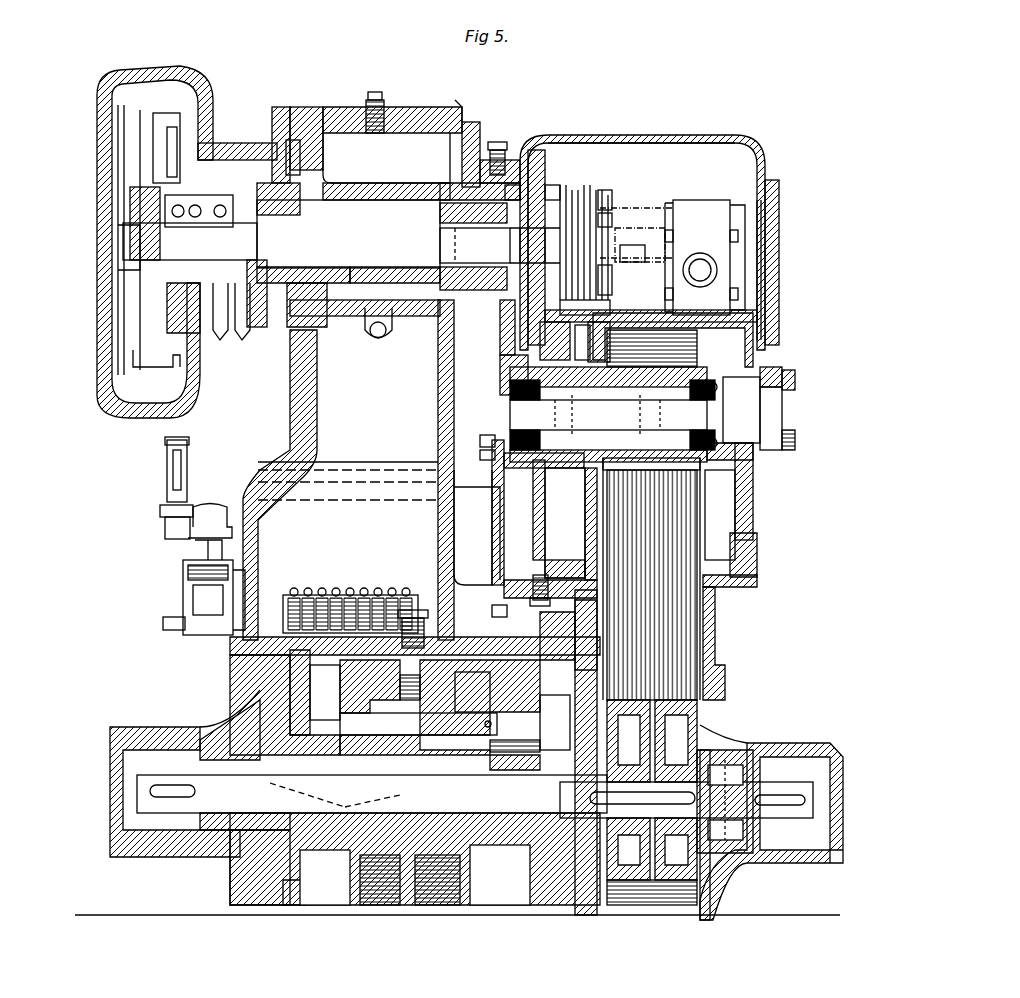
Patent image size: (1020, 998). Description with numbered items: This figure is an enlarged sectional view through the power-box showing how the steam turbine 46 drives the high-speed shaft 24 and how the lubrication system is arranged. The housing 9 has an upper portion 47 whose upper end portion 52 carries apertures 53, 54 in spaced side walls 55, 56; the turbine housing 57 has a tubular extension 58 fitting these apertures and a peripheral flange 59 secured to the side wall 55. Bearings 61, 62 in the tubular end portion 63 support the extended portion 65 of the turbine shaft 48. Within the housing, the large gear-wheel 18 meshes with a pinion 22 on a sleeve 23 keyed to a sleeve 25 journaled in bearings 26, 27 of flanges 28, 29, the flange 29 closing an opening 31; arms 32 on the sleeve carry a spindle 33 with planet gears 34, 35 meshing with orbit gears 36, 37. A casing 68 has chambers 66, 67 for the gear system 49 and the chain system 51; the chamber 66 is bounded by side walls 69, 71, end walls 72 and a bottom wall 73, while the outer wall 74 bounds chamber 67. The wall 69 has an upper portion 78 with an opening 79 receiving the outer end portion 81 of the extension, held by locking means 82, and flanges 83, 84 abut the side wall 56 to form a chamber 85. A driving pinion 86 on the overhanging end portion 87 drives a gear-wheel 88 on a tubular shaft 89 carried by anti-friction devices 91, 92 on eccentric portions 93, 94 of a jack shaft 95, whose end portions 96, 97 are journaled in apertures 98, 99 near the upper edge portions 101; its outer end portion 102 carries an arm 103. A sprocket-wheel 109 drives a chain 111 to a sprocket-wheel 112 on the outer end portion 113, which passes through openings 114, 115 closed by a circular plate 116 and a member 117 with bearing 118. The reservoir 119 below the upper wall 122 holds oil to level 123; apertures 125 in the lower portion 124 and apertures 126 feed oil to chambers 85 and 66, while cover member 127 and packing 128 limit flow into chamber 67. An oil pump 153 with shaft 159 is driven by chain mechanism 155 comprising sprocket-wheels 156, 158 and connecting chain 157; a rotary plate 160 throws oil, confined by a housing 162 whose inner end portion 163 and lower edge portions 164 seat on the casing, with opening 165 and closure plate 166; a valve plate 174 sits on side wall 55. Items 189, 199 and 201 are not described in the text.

The housing 9 is at (340, 636).
The gear-wheel 18 is at (240, 870).
The pinion 22 is at (215, 840).
The sleeve 23 is at (165, 805).
The high-speed shaft 24 is at (130, 848).
The sleeve 25 is at (290, 740).
The bearing 26 is at (292, 700).
The bearing 27 is at (530, 745).
The flange 28 is at (345, 700).
The flange 29 is at (540, 735).
The opening 31 is at (538, 630).
The arms 32 is at (500, 700).
The spindle 33 is at (440, 715).
The planet gear 34 is at (335, 793).
The planet gear 35 is at (355, 808).
The orbit gear 36 is at (390, 645).
The orbit gear 37 is at (456, 652).
The steam turbine 46 is at (125, 300).
The upper portion of the housing 47 is at (292, 430).
The turbine shaft 48 is at (500, 245).
The gear system 49 is at (592, 325).
The chain system 51 is at (700, 503).
The upper end portion 52 is at (330, 107).
The aperture 53 is at (305, 115).
The aperture 54 is at (460, 110).
The side wall 55 is at (293, 140).
The side wall 56 is at (470, 122).
The turbine housing 57 is at (205, 95).
The tubular extension 58 is at (383, 185).
The peripheral flange 59 is at (272, 135).
The bearing 61 is at (345, 210).
The bearing 62 is at (440, 210).
The tubular end portion 63 is at (268, 185).
The extended portion of the turbine shaft 65 is at (240, 270).
The chamber 66 is at (565, 523).
The chamber 67 is at (720, 515).
The casing 68 is at (757, 555).
The side wall 69 is at (495, 522).
The inner side wall 71 is at (588, 538).
The end walls 72 is at (536, 577).
The bottom wall 73 is at (528, 600).
The outer wall 74 is at (757, 582).
The upper portion 78 is at (510, 340).
The opening 79 is at (546, 170).
The outer end portion 81 is at (495, 142).
The locking means 82 is at (512, 185).
The flange 83 is at (485, 160).
The flange 84 is at (552, 195).
The chamber 85 is at (438, 458).
The driving pinion 86 is at (565, 200).
The overhanging end portion 87 is at (596, 195).
The gear-wheel 88 is at (515, 380).
The tubular shaft 89 is at (592, 352).
The anti-friction device 91 is at (540, 392).
The anti-friction device 92 is at (700, 395).
The eccentric portion 93 is at (548, 415).
The eccentric portion 94 is at (665, 408).
The jack shaft 95 is at (608, 415).
The end portion 96 is at (477, 434).
The end portion 97 is at (773, 420).
The aperture 98 is at (477, 450).
The aperture 99 is at (755, 458).
The horizontal upper edge portions 101 is at (755, 380).
The outer end portion 102 is at (795, 435).
The arm 103 is at (795, 396).
The sprocket-wheel 109 is at (690, 470).
The chain 111 is at (716, 618).
The sprocket-wheel 112 is at (655, 905).
The outer end portion 113 is at (686, 800).
The opening 114 is at (592, 735).
The opening 115 is at (705, 727).
The circular plate 116 is at (555, 660).
The member 117 is at (770, 745).
The bearing 118 is at (755, 775).
The chamber or reservoir 119 is at (348, 457).
The upper wall 122 is at (372, 133).
The oil level 123 is at (393, 460).
The lower portion of the side wall 124 is at (438, 498).
The apertures 125 is at (390, 482).
The apertures 126 is at (477, 528).
The cover member 127 is at (650, 300).
The packing 128 is at (547, 506).
The oil pump 153 is at (703, 200).
The chain mechanism 155 is at (600, 196).
The sprocket-wheel 156 is at (575, 339).
The connecting chain 157 is at (605, 295).
The sprocket-wheel 158 is at (600, 215).
The shaft 159 is at (640, 228).
The rotary plate 160 is at (640, 242).
The cover member or housing 162 is at (622, 136).
The inner end portion 163 is at (545, 137).
The lower edge portions 164 is at (772, 375).
The opening 165 is at (780, 220).
The removable closure plate 166 is at (780, 262).
The valve plate 174 is at (183, 575).
The eye bolt 189 is at (372, 345).
The housing 199 is at (342, 275).
The bearing 201 is at (440, 285).